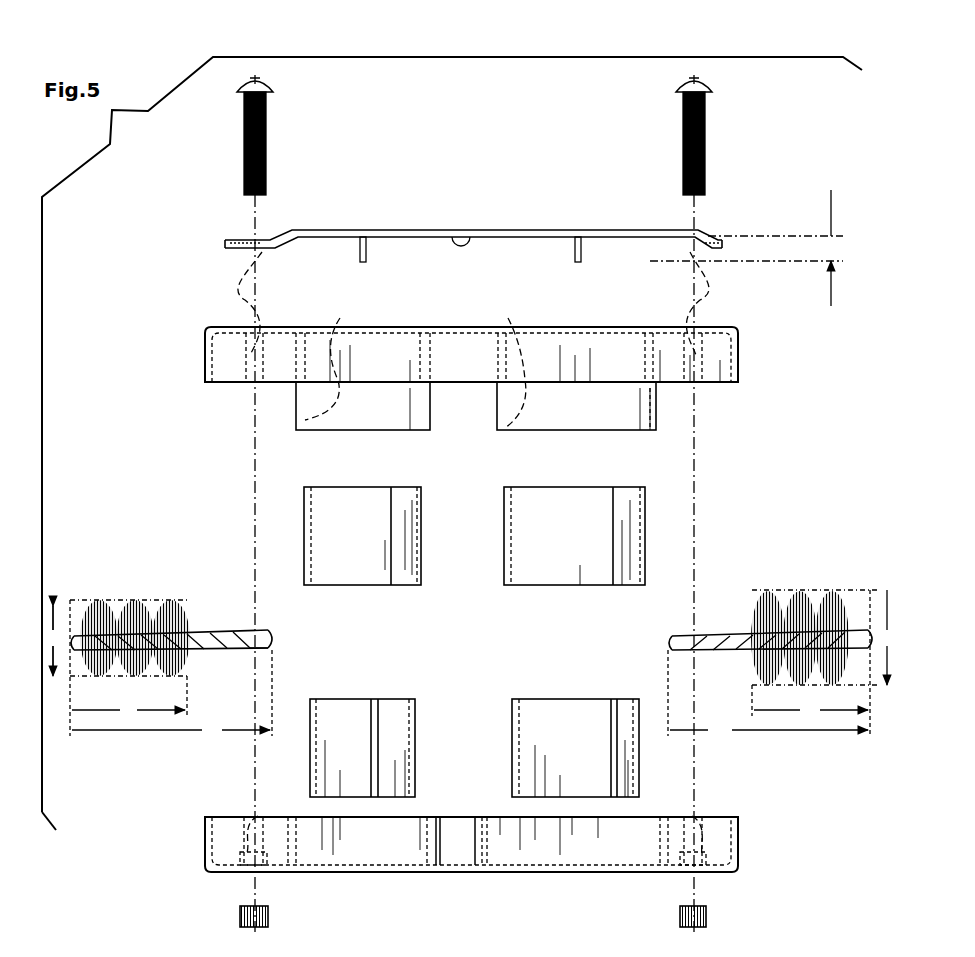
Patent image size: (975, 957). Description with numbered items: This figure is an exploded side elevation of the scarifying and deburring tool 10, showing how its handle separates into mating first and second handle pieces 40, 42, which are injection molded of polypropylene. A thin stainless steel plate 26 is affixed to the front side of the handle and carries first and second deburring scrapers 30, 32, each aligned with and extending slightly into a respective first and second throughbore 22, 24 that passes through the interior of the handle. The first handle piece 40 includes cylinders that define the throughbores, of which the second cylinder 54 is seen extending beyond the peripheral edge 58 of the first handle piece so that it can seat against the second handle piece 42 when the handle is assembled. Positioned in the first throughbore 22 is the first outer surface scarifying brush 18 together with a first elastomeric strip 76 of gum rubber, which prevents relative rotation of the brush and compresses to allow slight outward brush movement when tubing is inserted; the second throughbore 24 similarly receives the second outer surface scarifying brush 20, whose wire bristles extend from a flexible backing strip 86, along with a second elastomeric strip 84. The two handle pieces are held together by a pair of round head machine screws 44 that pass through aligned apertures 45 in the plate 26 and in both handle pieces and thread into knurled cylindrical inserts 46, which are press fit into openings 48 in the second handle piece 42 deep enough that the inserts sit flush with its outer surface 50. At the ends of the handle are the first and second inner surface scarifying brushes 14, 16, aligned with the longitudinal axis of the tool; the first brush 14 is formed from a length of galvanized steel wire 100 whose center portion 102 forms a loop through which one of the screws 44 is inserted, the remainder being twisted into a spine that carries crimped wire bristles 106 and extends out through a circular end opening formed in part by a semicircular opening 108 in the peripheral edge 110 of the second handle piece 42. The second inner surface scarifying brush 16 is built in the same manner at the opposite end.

The scarifying and deburring tool 10 is at (168, 349).
The first inner surface scarifying brush 14 is at (205, 602).
The second inner surface scarifying brush 16 is at (746, 598).
The first outer surface scarifying brush 18 is at (374, 692).
The second outer surface scarifying brush 20 is at (558, 692).
The first throughbore 22 is at (333, 353).
The second throughbore 24 is at (506, 357).
The plate 26 is at (473, 228).
The first deburring scraper 30 is at (368, 248).
The second deburring scraper 32 is at (577, 248).
The first handle piece 40 is at (517, 365).
The second handle piece 42 is at (515, 866).
The screws 44 is at (267, 138).
The apertures 45 is at (236, 292).
The cylindrical inserts 46 is at (252, 918).
The openings 48 is at (262, 866).
The outer surface 50 is at (470, 873).
The second cylinder 54 is at (648, 412).
The peripheral edge 58 is at (298, 405).
The first elastomeric strip 76 is at (348, 538).
The second elastomeric strip 84 is at (578, 535).
The flexible backing strip 86 is at (548, 733).
The galvanized steel wire 100 is at (226, 608).
The center portion 102 is at (270, 635).
The crimped wire bristles 106 is at (132, 608).
The semicircular opening 108 is at (722, 636).
The peripheral edge 110 is at (842, 615).